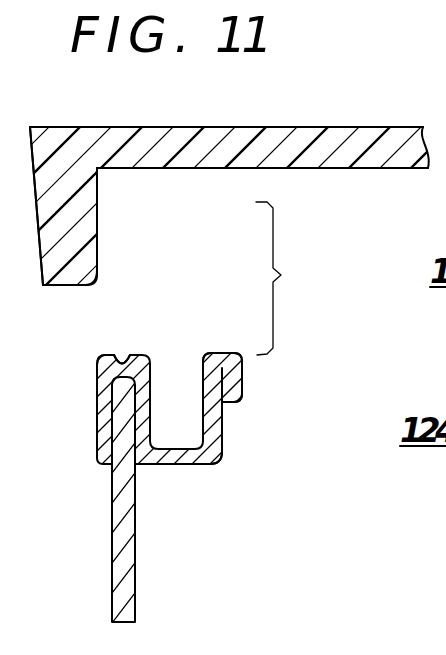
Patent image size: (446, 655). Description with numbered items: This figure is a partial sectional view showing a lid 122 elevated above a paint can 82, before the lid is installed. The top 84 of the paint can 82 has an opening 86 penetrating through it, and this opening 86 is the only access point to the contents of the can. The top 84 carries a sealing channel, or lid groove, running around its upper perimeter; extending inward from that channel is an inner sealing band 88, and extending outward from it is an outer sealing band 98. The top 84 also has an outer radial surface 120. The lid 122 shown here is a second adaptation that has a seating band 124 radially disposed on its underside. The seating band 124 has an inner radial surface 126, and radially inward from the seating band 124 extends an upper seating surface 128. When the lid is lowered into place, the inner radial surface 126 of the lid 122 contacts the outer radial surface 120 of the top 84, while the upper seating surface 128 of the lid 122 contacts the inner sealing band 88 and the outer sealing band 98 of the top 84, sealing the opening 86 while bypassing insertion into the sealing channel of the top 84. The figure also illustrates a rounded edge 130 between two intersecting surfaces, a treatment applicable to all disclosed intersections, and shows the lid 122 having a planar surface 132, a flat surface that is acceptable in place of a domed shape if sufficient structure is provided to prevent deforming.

The paint can 82 is at (112, 587).
The top 84 is at (108, 462).
The opening 86 is at (278, 380).
The inner sealing band 88 is at (215, 352).
The outer sealing band 98 is at (127, 357).
The outer radial surface 120 is at (97, 395).
The lid 122 is at (220, 127).
The seating band 124 is at (34, 180).
The inner radial surface 126 is at (97, 215).
The upper seating surface 128 is at (163, 169).
The rounded edge 130 is at (88, 283).
The planar surface 132 is at (346, 128).